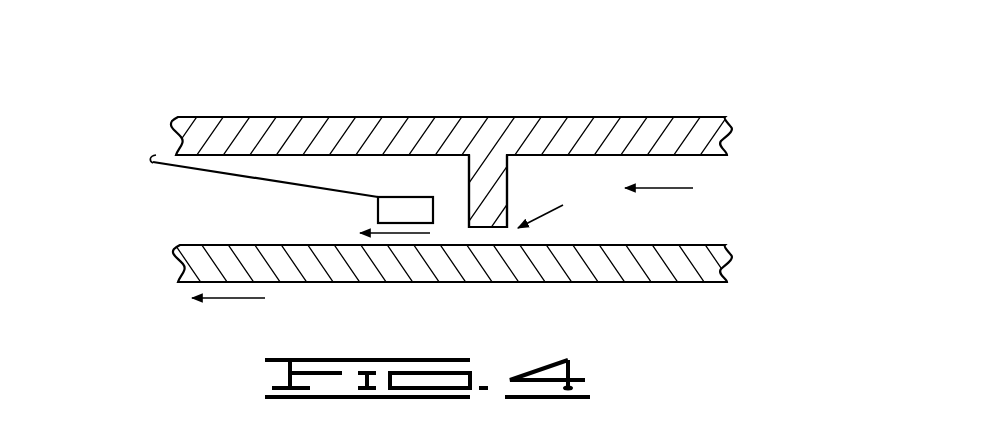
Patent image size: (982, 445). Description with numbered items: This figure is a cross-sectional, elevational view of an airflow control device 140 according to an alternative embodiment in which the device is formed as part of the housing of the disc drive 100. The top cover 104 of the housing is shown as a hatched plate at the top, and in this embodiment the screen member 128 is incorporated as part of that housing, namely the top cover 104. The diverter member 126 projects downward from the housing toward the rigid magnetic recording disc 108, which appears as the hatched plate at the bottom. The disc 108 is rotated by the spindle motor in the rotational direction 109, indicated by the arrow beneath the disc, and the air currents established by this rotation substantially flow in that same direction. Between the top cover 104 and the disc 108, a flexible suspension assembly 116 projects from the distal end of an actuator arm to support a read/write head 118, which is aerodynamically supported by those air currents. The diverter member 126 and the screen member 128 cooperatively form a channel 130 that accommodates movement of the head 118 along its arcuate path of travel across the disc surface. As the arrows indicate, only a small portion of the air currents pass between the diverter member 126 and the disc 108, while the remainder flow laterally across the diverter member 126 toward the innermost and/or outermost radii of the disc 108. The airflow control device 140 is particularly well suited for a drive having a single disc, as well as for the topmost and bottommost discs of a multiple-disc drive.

The disc drive 100 is at (152, 108).
The top cover 104 is at (243, 117).
The rigid magnetic recording disc 108 is at (675, 257).
The rotational direction 109 is at (225, 299).
The flexible suspension assembly 116 is at (232, 177).
The read/write head 118 is at (385, 208).
The diverter member 126 is at (498, 196).
The screen member 128 is at (410, 130).
The channel 130 is at (454, 176).
The airflow control device 140 is at (745, 158).